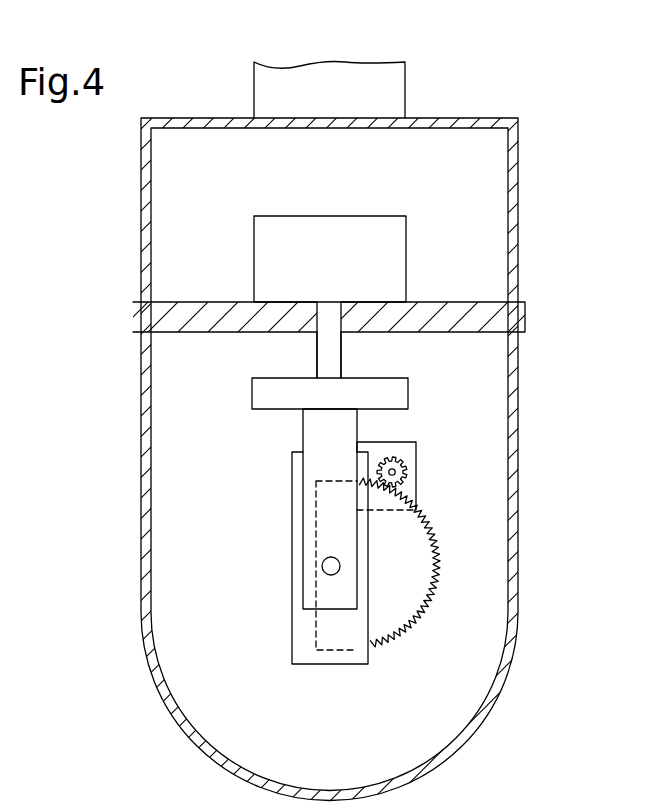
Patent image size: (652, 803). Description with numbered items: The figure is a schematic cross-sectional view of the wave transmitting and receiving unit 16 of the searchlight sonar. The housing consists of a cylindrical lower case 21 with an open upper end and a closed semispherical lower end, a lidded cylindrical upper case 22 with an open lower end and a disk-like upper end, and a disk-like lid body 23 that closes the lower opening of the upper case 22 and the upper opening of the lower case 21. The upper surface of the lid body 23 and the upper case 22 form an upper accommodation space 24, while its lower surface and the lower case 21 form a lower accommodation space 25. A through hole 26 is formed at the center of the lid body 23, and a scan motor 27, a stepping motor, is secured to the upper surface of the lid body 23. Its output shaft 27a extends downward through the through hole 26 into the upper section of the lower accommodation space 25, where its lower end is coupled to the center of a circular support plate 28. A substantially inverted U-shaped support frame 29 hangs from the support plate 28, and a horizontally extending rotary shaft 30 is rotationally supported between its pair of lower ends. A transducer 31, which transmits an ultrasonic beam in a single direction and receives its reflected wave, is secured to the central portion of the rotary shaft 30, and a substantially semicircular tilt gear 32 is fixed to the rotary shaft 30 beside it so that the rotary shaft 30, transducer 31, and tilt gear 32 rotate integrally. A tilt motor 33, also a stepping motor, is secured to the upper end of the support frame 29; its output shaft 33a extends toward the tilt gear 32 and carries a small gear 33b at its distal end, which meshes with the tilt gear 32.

The wave transmitting and receiving unit 16 is at (566, 97).
The lower case 21 is at (520, 458).
The upper case 22 is at (521, 183).
The lid body 23 is at (528, 320).
The upper accommodation space 24 is at (480, 238).
The lower accommodation space 25 is at (480, 365).
The through hole 26 is at (334, 302).
The scan motor 27 is at (330, 215).
The output shaft 27a is at (317, 356).
The support plate 28 is at (408, 390).
The support frame 29 is at (303, 430).
The rotary shaft 30 is at (334, 557).
The transducer 31 is at (292, 558).
The tilt gear 32 is at (438, 575).
The tilt motor 33 is at (418, 443).
The output shaft 33a is at (392, 458).
The small gear 33b is at (407, 472).